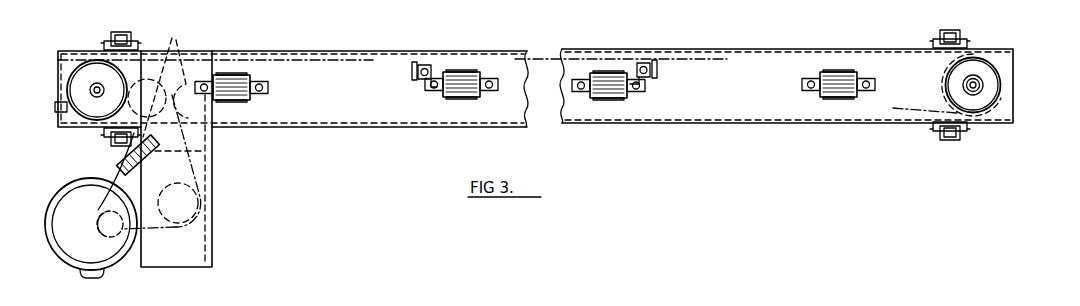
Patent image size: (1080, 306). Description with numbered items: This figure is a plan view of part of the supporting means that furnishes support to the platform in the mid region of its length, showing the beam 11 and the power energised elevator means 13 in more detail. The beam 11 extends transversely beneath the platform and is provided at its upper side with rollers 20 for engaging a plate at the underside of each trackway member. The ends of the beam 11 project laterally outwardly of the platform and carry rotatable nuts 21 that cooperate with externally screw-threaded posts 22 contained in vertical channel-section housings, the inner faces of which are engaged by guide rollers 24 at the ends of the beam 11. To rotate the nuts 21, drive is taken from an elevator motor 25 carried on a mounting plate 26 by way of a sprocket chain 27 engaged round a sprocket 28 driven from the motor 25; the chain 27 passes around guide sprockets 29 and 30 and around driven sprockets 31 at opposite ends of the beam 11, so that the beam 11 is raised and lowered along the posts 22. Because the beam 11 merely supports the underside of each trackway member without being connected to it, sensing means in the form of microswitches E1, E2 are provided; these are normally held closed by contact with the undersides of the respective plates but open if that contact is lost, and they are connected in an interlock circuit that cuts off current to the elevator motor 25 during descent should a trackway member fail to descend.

The beam 11 is at (265, 88).
The power energised elevator means 13 is at (66, 268).
The rollers 20 is at (231, 74).
The rotatable nuts 21 is at (95, 84).
The externally screw-threaded posts 22 is at (98, 84).
The guide rollers 24 is at (125, 33).
The elevator motor 25 is at (91, 224).
The mounting plate 26 is at (203, 236).
The sprocket chain 27 is at (157, 233).
The sprocket 28 is at (112, 232).
The guide sprocket 29 is at (208, 191).
The guide sprocket 30 is at (172, 38).
The driven sprockets 31 is at (75, 82).
The microswitch E1 is at (421, 62).
The microswitch E2 is at (644, 61).